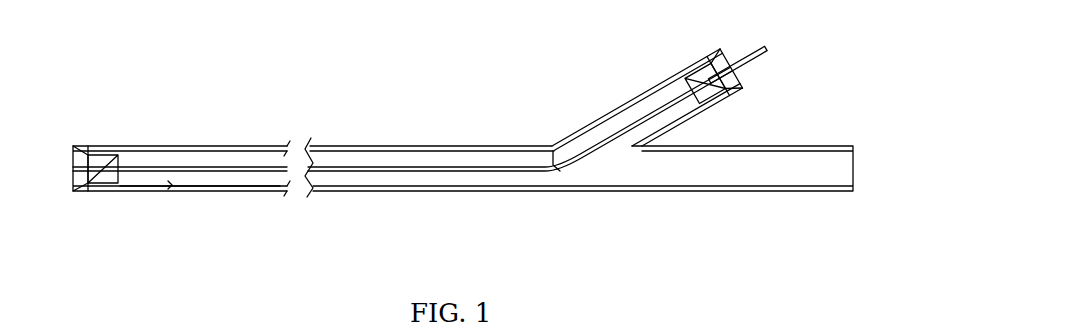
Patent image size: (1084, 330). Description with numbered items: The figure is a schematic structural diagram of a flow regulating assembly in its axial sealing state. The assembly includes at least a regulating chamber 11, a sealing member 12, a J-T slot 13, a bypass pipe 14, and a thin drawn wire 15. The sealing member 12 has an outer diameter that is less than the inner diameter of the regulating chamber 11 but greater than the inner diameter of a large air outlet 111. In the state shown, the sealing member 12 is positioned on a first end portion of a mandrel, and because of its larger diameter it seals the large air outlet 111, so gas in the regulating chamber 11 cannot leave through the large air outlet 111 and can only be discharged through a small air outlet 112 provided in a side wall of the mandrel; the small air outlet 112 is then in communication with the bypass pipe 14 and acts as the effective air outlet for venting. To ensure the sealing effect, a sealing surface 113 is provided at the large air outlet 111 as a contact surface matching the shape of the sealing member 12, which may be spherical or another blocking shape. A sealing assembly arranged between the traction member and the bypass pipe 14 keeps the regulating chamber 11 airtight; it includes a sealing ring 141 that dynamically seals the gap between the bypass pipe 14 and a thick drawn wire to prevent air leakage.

The regulating chamber 11 is at (137, 158).
The large air outlet 111 is at (88, 186).
The small air outlet 112 is at (172, 186).
The sealing surface 113 is at (88, 148).
The sealing member 12 is at (102, 155).
The J-T slot 13 is at (350, 146).
The bypass pipe 14 is at (637, 96).
The sealing ring 141 is at (708, 57).
The thin drawn wire 15 is at (230, 167).